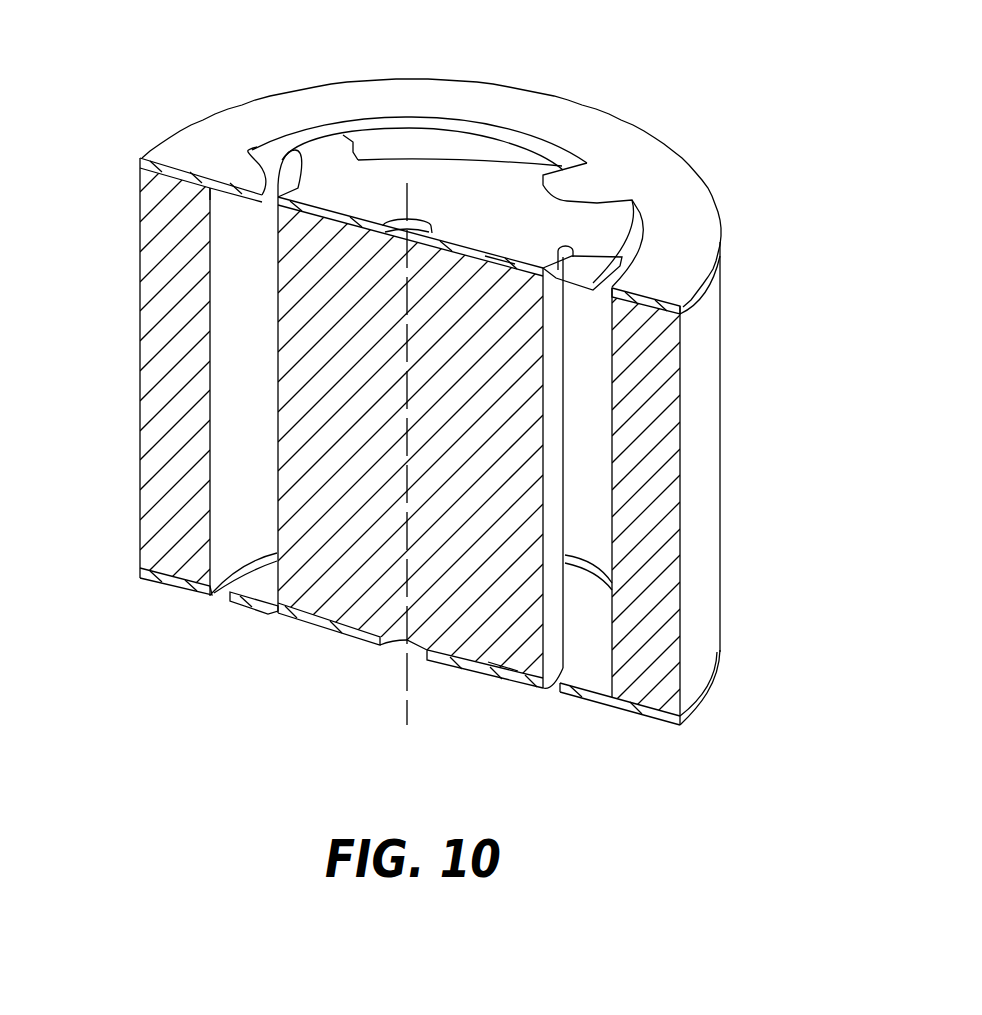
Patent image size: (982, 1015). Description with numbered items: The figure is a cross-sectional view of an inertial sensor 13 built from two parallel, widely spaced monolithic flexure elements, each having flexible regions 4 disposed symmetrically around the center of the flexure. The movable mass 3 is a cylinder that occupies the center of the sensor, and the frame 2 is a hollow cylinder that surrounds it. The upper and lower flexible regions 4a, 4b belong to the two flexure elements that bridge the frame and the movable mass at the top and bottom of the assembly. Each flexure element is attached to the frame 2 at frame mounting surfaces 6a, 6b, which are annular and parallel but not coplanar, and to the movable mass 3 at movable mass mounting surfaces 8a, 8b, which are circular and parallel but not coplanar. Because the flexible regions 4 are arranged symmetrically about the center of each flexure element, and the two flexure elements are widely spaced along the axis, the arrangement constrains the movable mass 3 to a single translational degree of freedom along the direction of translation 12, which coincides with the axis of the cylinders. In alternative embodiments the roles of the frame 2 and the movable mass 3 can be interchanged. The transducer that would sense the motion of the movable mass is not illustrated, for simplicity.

The frame 2 is at (140, 292).
The movable mass 3 is at (277, 400).
The flexible regions 4 is at (410, 140).
The flexible region 4a is at (647, 130).
The flexible region 4b is at (700, 703).
The frame mounting surface 6a is at (177, 182).
The frame mounting surface 6b is at (209, 597).
The movable mass mounting surface 8a is at (500, 262).
The movable mass mounting surface 8b is at (503, 652).
The direction of translation 12 is at (408, 203).
The inertial sensor 13 is at (772, 342).